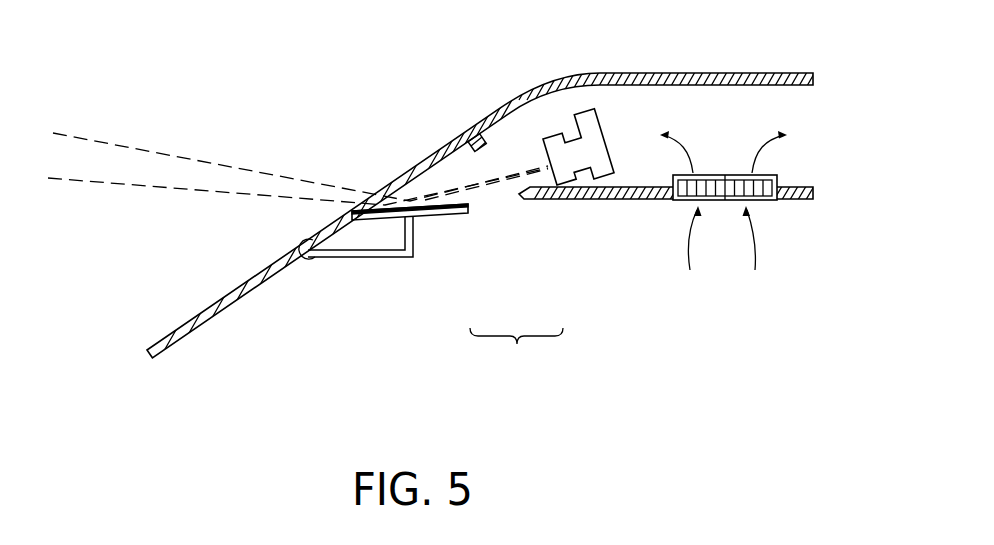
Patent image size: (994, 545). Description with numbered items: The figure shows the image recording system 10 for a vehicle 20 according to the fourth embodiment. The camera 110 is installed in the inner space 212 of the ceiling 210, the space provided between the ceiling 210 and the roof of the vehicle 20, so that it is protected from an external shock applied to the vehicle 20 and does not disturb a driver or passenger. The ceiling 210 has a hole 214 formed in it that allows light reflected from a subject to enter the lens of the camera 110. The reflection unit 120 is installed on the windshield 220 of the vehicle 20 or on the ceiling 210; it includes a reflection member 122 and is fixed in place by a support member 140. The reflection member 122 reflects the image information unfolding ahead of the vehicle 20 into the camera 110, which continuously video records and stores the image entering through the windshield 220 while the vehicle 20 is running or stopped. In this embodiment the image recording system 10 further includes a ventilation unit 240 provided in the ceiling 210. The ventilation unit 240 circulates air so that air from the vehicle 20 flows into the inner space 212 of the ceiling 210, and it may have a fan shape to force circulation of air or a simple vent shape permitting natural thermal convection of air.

The image recording system 10 is at (516, 353).
The vehicle 20 is at (637, 73).
The camera 110 is at (563, 163).
The reflection unit 120 is at (422, 203).
The reflection member 122 is at (423, 203).
The support member 140 is at (360, 258).
The ceiling 210 is at (650, 200).
The inner space 212 is at (690, 111).
The hole 214 is at (494, 159).
The windshield 220 is at (190, 320).
The ventilation unit 240 is at (757, 191).